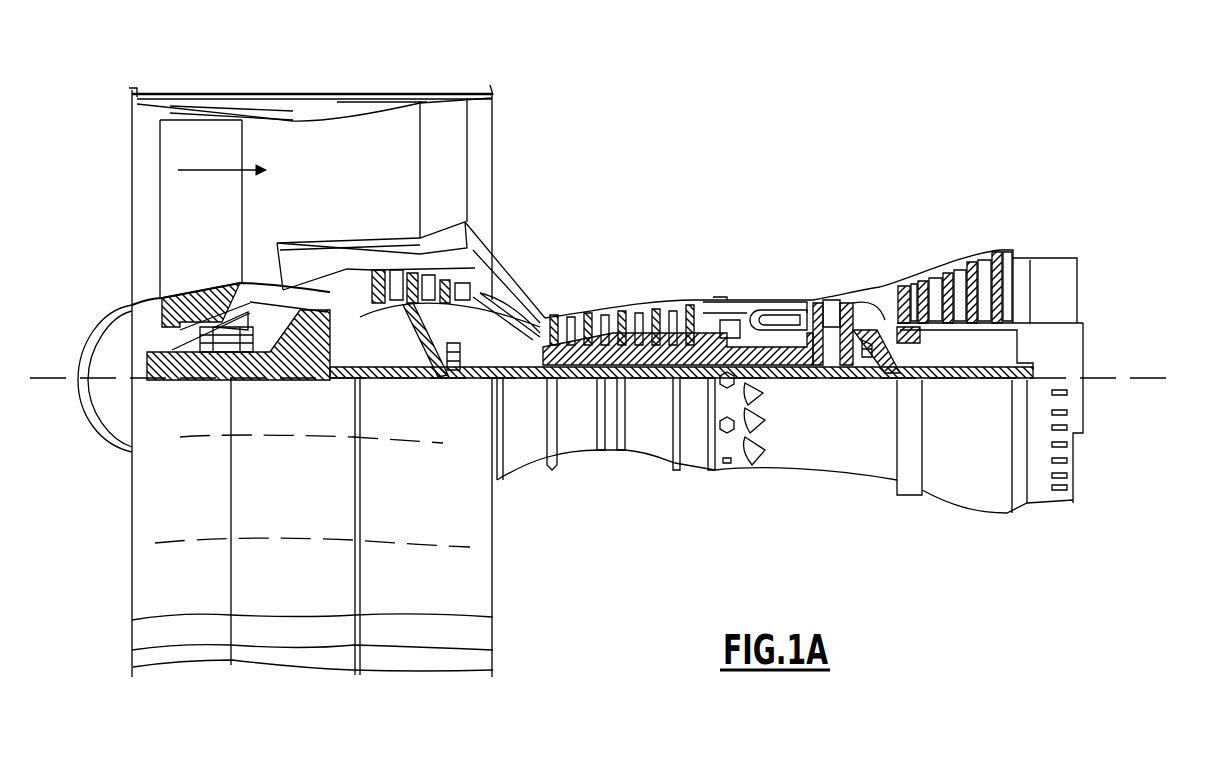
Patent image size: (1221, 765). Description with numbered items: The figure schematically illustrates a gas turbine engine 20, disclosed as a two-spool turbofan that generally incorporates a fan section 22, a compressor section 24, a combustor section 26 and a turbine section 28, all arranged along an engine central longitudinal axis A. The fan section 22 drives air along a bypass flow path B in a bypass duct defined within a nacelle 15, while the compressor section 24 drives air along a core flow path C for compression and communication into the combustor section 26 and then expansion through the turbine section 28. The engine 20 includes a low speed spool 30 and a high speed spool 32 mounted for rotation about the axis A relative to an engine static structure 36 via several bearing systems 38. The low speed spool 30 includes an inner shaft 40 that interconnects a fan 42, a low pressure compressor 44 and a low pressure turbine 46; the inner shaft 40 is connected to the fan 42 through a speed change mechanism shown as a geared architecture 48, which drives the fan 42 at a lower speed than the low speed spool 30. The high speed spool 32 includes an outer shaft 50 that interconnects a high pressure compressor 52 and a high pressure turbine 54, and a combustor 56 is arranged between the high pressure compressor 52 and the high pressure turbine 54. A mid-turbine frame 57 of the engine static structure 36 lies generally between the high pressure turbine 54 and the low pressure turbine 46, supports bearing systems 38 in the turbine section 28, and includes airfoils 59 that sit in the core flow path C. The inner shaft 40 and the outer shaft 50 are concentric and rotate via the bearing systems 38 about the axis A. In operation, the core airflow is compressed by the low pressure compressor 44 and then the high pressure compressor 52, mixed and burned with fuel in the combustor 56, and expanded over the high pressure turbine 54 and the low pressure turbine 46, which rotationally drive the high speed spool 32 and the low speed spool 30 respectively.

The gas turbine engine 20 is at (772, 145).
The fan section 22 is at (242, 84).
The nacelle 15 is at (315, 97).
The fan 42 is at (201, 209).
The low pressure compressor 44 is at (413, 290).
The compressor section 24 is at (548, 284).
The high pressure compressor 52 is at (627, 347).
The high speed spool 32 is at (700, 333).
The combustor section 26 is at (766, 272).
The combustor 56 is at (770, 320).
The high pressure turbine 54 is at (833, 298).
The mid-turbine frame 57 is at (875, 290).
The turbine section 28 is at (917, 236).
The low pressure turbine 46 is at (960, 258).
The airfoils 59 is at (905, 337).
The geared architecture 48 is at (322, 360).
The bearing systems 38 is at (452, 365).
The outer shaft 50 is at (773, 372).
The inner shaft 40 is at (513, 380).
The low speed spool 30 is at (652, 385).
The engine static structure 36 is at (690, 470).
The engine central longitudinal axis A is at (1163, 378).
The bypass flow path B is at (220, 170).
The core flow path C is at (312, 277).